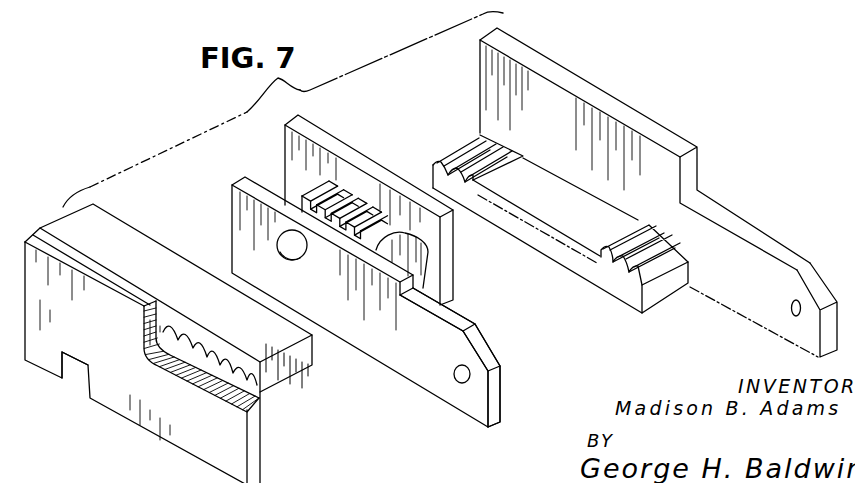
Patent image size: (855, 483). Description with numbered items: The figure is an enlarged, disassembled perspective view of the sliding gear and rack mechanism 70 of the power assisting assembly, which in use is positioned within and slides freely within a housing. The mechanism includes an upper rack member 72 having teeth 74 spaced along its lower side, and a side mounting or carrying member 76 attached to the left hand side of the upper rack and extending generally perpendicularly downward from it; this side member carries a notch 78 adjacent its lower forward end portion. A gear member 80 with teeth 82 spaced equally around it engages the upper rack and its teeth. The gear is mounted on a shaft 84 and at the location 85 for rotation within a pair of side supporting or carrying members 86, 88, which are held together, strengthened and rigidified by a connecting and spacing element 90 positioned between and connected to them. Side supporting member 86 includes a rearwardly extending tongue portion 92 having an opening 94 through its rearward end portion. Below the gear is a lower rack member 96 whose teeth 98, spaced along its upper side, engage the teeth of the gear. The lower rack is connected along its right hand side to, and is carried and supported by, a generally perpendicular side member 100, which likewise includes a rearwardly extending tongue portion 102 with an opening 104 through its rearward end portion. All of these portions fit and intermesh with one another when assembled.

The sliding gear and rack mechanism 70 is at (172, 146).
The upper rack member 72 is at (287, 377).
The teeth 74 is at (240, 382).
The side mounting or carrying member 76 is at (186, 438).
The notch 78 is at (88, 378).
The gear member 80 is at (300, 189).
The teeth 82 is at (342, 184).
The shaft 84 is at (290, 246).
The mounting location 85 is at (293, 260).
The side supporting or carrying member 86 is at (232, 208).
The side supporting or carrying member 88 is at (285, 141).
The connecting and spacing element 90 is at (413, 265).
The tongue portion 92 is at (473, 403).
The opening 94 is at (453, 382).
The lower rack member 96 is at (621, 293).
The teeth 98 is at (627, 242).
The side member 100 is at (637, 108).
The tongue portion 102 is at (800, 337).
The opening 104 is at (790, 316).